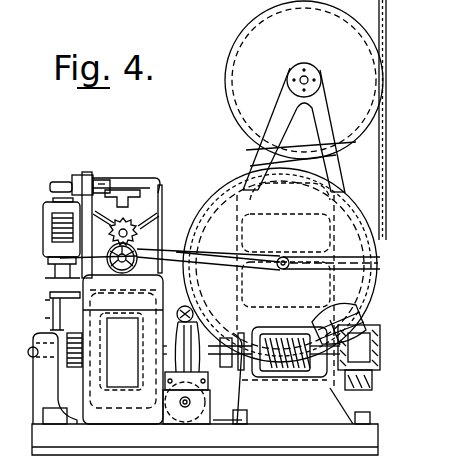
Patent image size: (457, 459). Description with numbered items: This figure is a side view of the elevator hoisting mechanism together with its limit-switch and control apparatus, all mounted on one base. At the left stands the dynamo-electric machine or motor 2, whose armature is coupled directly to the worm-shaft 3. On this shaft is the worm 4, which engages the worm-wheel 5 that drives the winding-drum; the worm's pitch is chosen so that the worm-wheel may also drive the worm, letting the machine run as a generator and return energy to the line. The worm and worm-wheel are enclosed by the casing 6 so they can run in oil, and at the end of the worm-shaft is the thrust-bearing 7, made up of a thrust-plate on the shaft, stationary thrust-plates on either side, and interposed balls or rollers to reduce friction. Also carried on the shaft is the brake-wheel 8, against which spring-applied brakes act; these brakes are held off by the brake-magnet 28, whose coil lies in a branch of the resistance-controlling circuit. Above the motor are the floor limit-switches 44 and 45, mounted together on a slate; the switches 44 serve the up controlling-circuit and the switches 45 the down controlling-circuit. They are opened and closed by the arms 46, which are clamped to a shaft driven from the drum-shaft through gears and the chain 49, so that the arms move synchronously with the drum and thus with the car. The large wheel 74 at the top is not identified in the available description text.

The motor 2 is at (112, 368).
The worm-shaft 3 is at (207, 362).
The worm 4 is at (290, 372).
The worm-wheel 5 is at (367, 309).
The casing 6 is at (238, 178).
The thrust-bearing 7 is at (378, 353).
The brake-wheel 8 is at (179, 318).
The brake-magnet 28 is at (187, 406).
The floor limit-switches 44 is at (165, 170).
The floor limit-switches 45 is at (100, 182).
The arms 46 is at (152, 212).
The chain 49 is at (150, 250).
The pulley wheel 74 is at (250, 36).